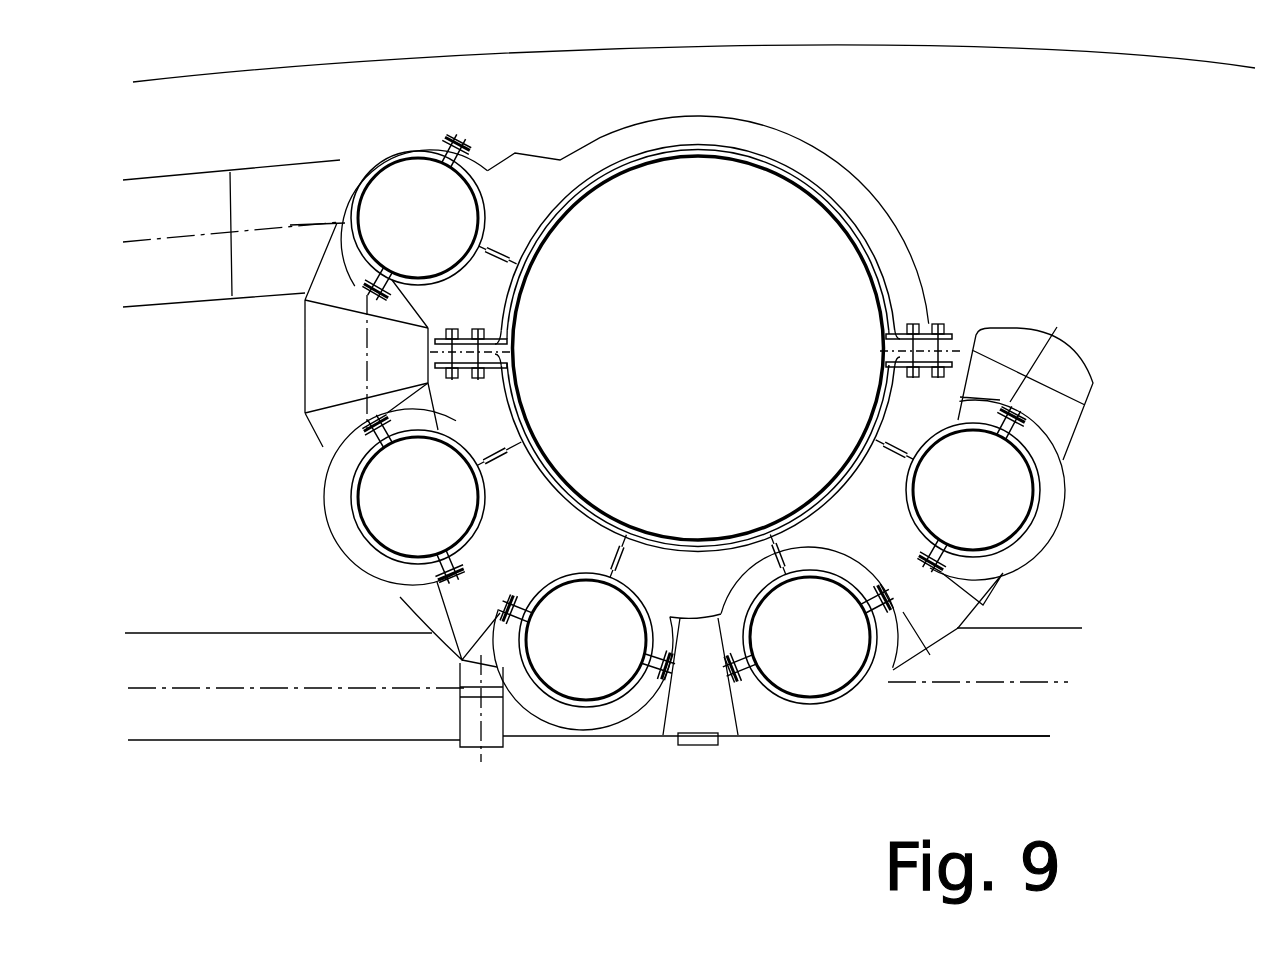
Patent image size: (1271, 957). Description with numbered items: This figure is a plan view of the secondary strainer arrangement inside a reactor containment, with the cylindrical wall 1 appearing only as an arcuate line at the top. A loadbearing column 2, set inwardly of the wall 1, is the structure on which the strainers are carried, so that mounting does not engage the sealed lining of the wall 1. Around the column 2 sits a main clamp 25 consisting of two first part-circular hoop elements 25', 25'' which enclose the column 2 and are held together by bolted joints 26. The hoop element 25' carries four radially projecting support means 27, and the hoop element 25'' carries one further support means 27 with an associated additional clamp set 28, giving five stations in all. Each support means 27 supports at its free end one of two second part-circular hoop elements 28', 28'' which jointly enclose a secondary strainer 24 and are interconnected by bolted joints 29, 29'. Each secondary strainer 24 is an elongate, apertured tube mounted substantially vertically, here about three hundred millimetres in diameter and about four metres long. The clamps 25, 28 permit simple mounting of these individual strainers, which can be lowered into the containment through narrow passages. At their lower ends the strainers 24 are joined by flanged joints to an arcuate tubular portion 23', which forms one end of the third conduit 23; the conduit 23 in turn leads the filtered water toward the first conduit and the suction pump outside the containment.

The cylindrical wall 1 is at (1100, 55).
The column 2 is at (810, 240).
The third conduit 23 is at (234, 284).
The arcuate tubular portion 23' is at (921, 682).
The secondary strainer 24 is at (590, 685).
The main clamp 25 is at (760, 240).
The first part-circular hoop element 25' is at (698, 462).
The first part-circular hoop element 25'' is at (697, 315).
The bolted joint 26 is at (945, 332).
The radially projecting support means 27 is at (503, 252).
The clamp set 28 is at (636, 394).
The second part-circular hoop element 28' is at (478, 486).
The second part-circular hoop element 28'' is at (368, 514).
The bolted joint 29 is at (314, 697).
The bolted joint 29' is at (313, 350).